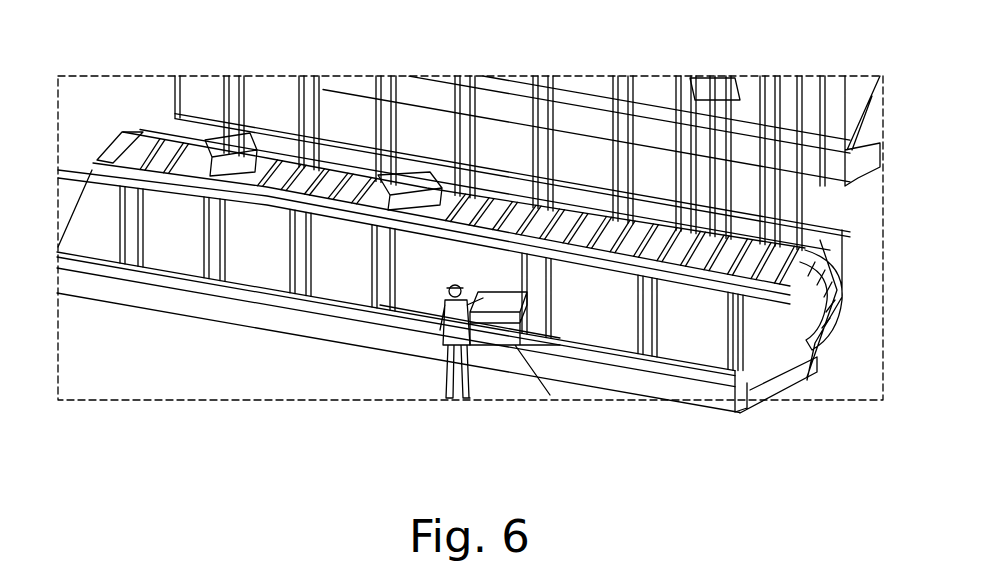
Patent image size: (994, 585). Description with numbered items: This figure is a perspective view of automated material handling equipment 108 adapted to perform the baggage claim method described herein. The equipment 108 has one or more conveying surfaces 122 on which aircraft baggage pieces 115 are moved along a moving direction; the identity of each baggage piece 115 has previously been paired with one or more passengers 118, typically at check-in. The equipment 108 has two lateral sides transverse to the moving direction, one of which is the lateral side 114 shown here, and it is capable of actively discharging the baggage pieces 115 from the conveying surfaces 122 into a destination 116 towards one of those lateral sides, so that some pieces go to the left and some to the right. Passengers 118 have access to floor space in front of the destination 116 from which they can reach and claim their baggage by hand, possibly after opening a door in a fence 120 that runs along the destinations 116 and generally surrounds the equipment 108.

The automated material handling equipment 108 is at (840, 416).
The lateral side 114 is at (558, 343).
The aircraft baggage pieces 115 is at (225, 137).
The destination 116 is at (498, 349).
The passenger 118 is at (438, 317).
The fence 120 is at (426, 299).
The conveying surface 122 is at (787, 300).